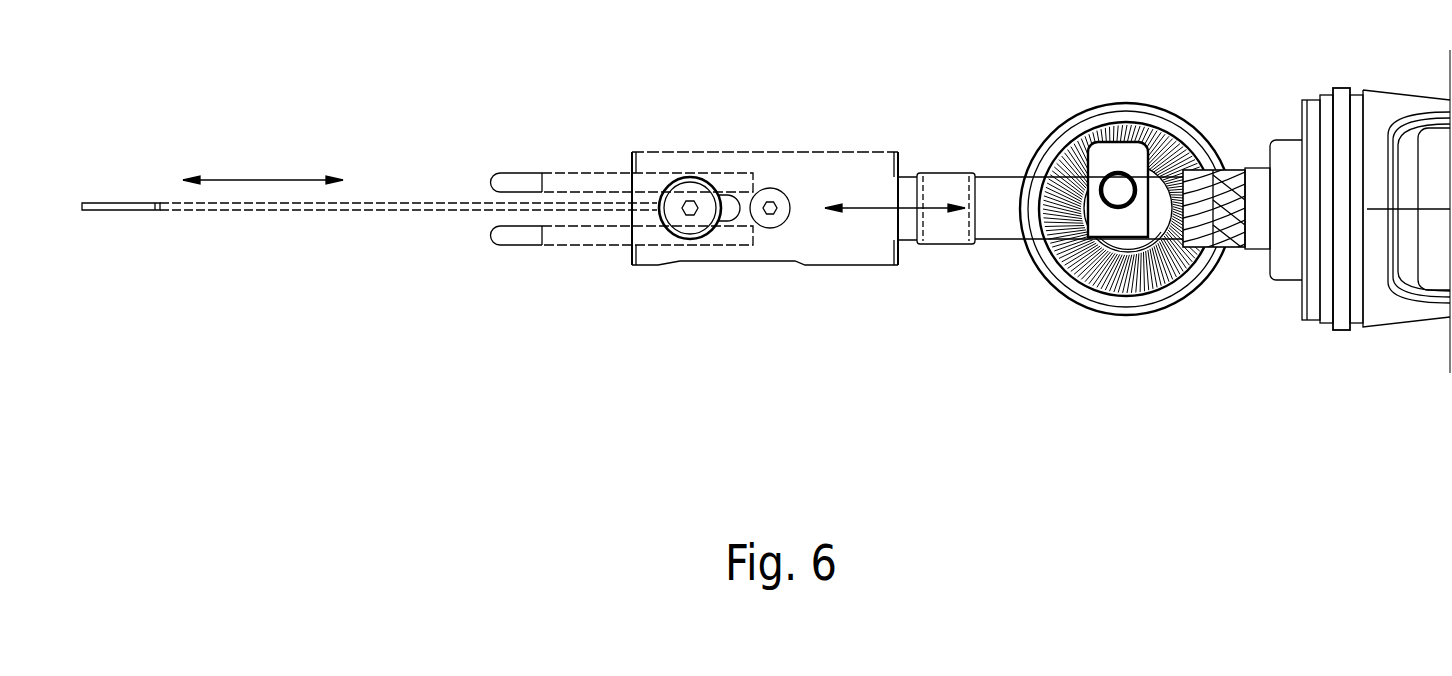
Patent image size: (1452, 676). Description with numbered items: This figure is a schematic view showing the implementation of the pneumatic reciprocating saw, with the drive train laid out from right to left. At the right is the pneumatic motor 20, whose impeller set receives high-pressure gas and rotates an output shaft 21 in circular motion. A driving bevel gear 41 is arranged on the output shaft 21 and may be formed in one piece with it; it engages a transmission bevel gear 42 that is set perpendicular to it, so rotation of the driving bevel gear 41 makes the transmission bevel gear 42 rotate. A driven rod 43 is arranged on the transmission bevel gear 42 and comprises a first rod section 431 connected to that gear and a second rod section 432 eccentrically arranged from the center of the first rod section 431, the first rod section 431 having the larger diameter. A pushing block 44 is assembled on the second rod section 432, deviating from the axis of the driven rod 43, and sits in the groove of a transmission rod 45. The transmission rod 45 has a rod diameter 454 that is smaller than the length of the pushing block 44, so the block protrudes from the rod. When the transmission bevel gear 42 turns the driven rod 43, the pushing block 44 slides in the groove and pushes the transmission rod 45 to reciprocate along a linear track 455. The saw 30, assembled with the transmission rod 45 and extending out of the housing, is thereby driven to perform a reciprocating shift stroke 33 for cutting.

The pneumatic motor 20 is at (1395, 330).
The output shaft 21 is at (1258, 176).
The saw 30 is at (410, 210).
The reciprocating shift stroke 33 is at (258, 180).
The driving bevel gear 41 is at (1207, 248).
The transmission bevel gear 42 is at (1177, 117).
The driven rod 43 is at (1127, 279).
The first rod section 431 is at (1140, 253).
The second rod section 432 is at (1120, 193).
The pushing block 44 is at (1105, 153).
The transmission rod 45 is at (1013, 244).
The rod diameter 454 is at (993, 177).
The linear track 455 is at (882, 208).